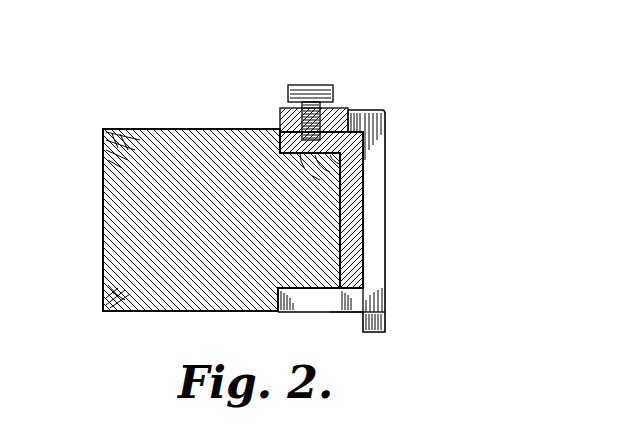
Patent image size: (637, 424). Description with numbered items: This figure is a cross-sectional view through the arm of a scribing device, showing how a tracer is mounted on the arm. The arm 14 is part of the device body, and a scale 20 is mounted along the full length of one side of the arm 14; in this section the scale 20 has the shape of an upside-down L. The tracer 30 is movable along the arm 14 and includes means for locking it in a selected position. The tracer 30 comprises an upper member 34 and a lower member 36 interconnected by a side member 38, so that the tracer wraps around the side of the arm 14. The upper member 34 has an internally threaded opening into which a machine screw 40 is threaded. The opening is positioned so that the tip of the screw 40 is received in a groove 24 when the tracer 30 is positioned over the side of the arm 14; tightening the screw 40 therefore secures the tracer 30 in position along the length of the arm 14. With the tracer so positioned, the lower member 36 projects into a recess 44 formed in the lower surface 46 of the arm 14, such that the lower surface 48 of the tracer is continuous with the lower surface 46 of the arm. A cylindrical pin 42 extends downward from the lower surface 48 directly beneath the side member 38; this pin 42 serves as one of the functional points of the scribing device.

The arm 14 is at (128, 220).
The scale 20 is at (363, 158).
The groove 24 is at (282, 150).
The tracer 30 is at (394, 193).
The upper member 34 is at (357, 110).
The lower member 36 is at (287, 314).
The side member 38 is at (373, 218).
The machine screw 40 is at (310, 92).
The cylindrical pin 42 is at (384, 327).
The recess 44 is at (327, 292).
The lower surface 46 is at (153, 310).
The lower surface 48 is at (348, 314).